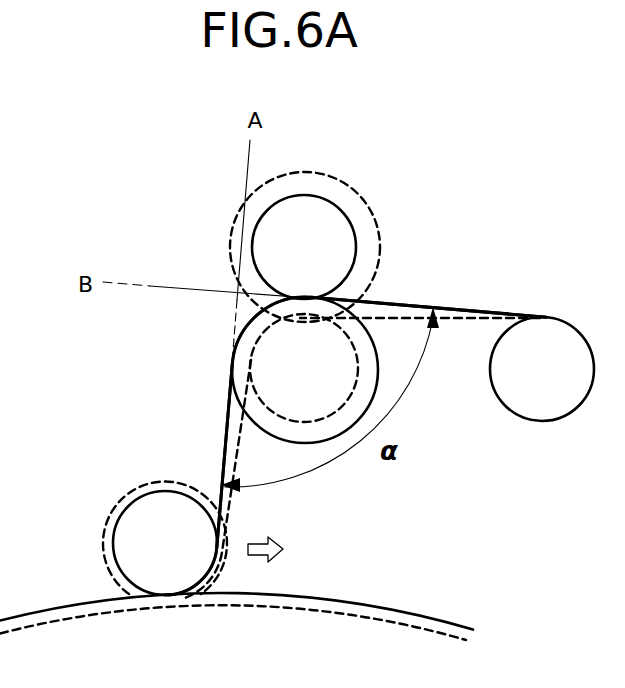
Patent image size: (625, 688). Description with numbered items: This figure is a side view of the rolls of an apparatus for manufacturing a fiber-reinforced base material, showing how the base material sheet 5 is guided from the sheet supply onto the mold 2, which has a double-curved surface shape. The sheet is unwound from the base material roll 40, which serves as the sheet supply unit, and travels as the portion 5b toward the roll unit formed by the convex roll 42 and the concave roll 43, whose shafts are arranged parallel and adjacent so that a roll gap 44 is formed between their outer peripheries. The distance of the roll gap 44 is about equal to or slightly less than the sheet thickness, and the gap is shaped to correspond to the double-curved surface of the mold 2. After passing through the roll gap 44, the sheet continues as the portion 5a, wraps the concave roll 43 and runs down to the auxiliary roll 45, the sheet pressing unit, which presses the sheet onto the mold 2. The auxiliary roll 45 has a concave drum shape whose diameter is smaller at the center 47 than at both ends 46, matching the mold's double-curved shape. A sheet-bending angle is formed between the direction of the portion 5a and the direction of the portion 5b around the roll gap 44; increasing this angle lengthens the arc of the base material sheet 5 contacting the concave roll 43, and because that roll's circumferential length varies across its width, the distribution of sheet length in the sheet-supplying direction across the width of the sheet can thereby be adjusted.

The mold 2 is at (388, 608).
The base material sheet 5 is at (223, 422).
The portion of the base material sheet having passed through the roll gap 5a is at (223, 453).
The portion of the base material sheet before passing through the roll gap 5b is at (462, 303).
The base material roll 40 is at (547, 403).
The convex roll 42 is at (267, 235).
The concave roll 43 is at (277, 357).
The roll gap 44 is at (297, 297).
The auxiliary roll 45 is at (133, 556).
The ends of the auxiliary roll 46 is at (112, 543).
The center of the auxiliary roll 47 is at (125, 494).